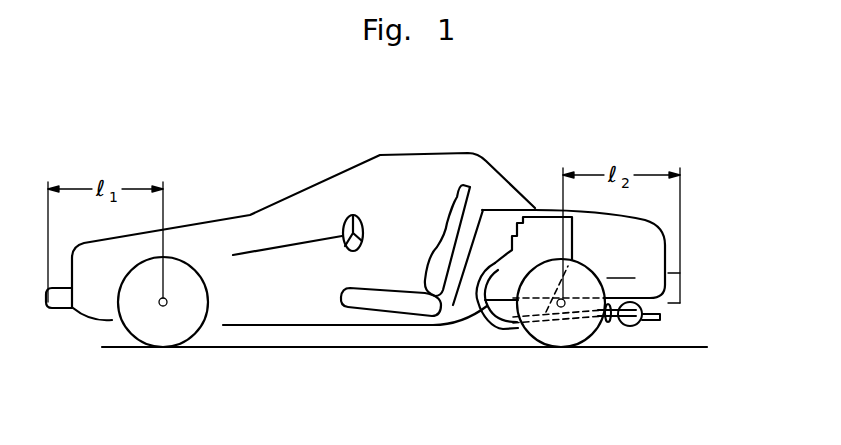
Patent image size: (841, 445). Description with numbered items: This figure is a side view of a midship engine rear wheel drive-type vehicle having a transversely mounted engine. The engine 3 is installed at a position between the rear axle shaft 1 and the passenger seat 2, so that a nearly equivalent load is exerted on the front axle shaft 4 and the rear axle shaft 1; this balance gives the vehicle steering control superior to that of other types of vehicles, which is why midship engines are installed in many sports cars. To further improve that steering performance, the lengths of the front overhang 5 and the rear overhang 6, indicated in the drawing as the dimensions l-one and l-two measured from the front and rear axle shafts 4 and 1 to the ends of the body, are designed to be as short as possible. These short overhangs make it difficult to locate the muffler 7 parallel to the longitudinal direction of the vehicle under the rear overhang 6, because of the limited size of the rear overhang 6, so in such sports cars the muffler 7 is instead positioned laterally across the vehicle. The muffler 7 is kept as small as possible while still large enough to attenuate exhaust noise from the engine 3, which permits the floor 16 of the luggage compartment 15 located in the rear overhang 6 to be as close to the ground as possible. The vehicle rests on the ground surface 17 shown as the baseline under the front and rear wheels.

The rear axle shaft 1 is at (557, 308).
The passenger seat 2 is at (393, 298).
The engine 3 is at (537, 213).
The front axle shaft 4 is at (163, 306).
The front overhang 5 is at (93, 302).
The rear overhang 6 is at (645, 238).
The muffler 7 is at (630, 327).
The luggage compartment 15 is at (621, 265).
The floor 16 is at (645, 297).
The ground surface 17 is at (673, 347).